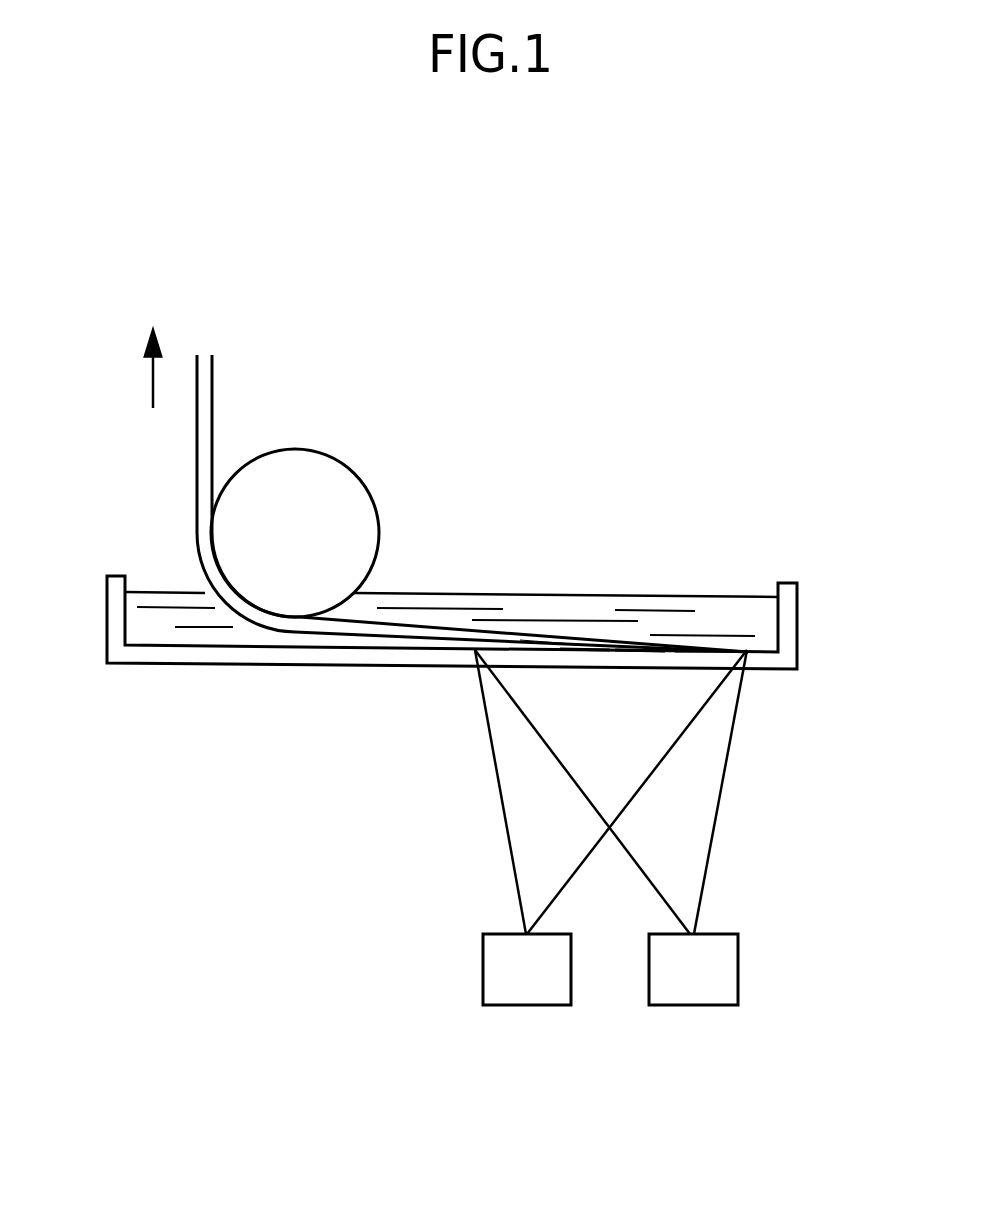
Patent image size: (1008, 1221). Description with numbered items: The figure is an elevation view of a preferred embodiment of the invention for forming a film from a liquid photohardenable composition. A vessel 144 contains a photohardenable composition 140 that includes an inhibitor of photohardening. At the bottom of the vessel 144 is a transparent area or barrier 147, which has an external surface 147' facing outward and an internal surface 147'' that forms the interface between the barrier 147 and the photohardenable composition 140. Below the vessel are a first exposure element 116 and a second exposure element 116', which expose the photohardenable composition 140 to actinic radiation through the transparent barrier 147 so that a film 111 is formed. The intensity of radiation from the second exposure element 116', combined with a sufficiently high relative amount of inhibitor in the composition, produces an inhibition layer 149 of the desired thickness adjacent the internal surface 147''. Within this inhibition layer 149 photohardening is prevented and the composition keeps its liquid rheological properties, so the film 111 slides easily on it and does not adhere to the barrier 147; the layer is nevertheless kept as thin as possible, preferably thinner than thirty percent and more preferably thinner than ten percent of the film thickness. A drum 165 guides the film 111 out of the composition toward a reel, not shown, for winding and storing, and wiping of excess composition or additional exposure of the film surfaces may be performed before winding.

The film 111 is at (412, 637).
The first exposure element 116 is at (494, 1000).
The second exposure element 116' is at (726, 1001).
The photohardenable composition 140 is at (182, 613).
The vessel 144 is at (790, 582).
The transparent area or barrier 147 is at (509, 696).
The external surface 147' is at (734, 748).
The internal surface 147'' is at (779, 702).
The inhibition layer 149 is at (555, 648).
The drum 165 is at (300, 462).